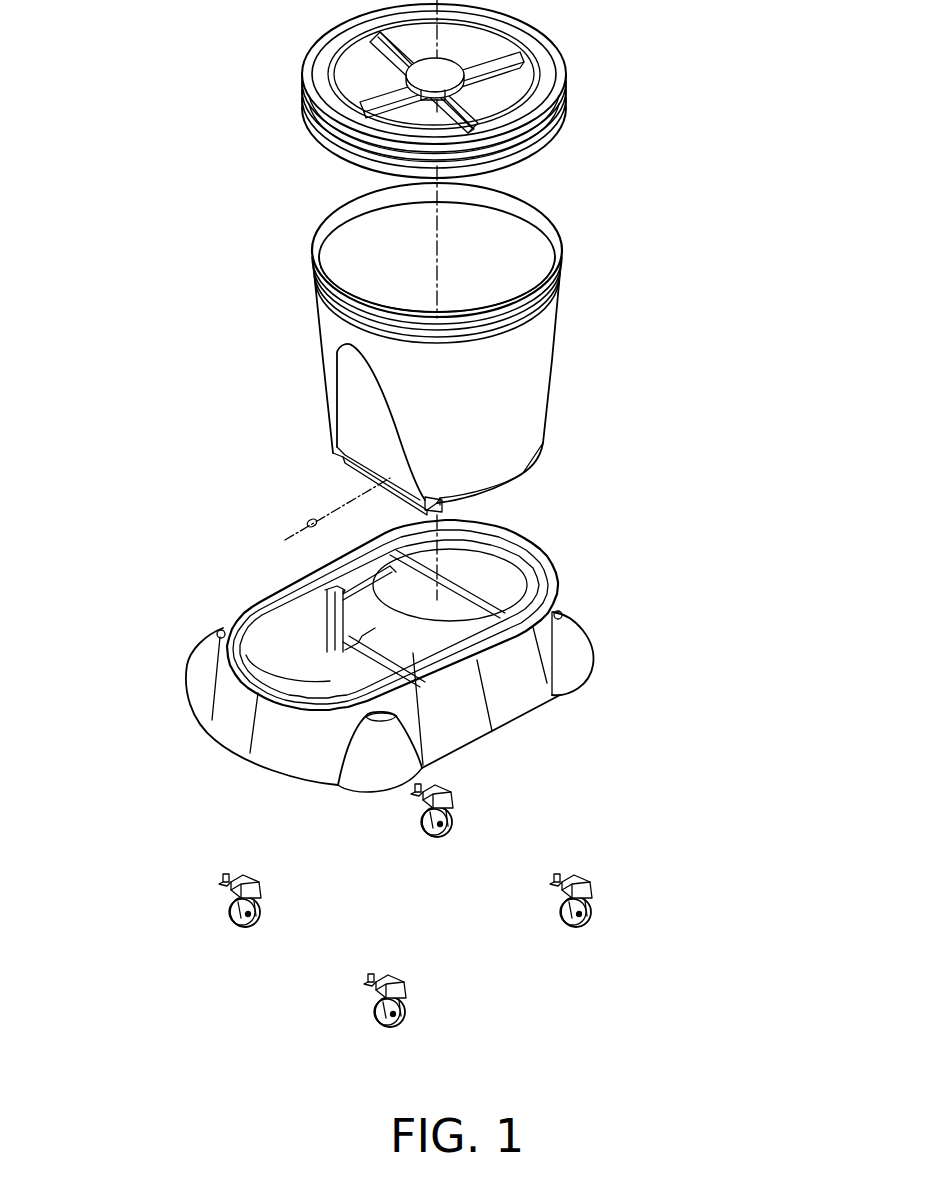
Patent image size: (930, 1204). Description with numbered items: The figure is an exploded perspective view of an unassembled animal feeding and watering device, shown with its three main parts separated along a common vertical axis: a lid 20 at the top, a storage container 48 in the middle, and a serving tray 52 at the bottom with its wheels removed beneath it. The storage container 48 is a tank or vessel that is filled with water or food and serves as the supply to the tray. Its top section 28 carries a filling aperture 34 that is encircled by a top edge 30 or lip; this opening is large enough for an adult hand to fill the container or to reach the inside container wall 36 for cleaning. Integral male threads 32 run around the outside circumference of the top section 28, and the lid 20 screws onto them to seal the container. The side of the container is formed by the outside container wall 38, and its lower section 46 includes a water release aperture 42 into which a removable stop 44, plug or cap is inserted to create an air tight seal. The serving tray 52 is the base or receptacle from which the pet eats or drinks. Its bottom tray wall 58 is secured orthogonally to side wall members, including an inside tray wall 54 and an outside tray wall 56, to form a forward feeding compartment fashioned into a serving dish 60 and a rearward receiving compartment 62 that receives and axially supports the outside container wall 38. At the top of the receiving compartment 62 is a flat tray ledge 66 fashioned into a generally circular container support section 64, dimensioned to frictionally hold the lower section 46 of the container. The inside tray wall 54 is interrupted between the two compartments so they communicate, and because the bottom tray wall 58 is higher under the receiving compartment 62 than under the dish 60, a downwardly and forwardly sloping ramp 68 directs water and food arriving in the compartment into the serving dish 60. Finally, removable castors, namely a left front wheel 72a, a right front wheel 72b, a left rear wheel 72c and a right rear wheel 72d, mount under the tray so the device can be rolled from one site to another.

The lid 20 is at (322, 44).
The top section 28 is at (557, 262).
The top edge 30 is at (431, 347).
The male threads 32 is at (560, 290).
The filling aperture 34 is at (375, 243).
The inside container wall 36 is at (465, 232).
The outside container wall 38 is at (525, 357).
The water release aperture 42 is at (385, 482).
The stop 44 is at (307, 521).
The lower section 46 is at (467, 498).
The storage container 48 is at (478, 403).
The serving tray 52 is at (318, 776).
The inside tray wall 54 is at (371, 663).
The outside tray wall 56 is at (530, 678).
The bottom tray wall 58 is at (290, 673).
The serving dish 60 is at (320, 680).
The receiving compartment 62 is at (478, 583).
The container support section 64 is at (533, 592).
The tray ledge 66 is at (335, 555).
The sloping ramp 68 is at (405, 617).
The left front wheel 72a is at (410, 1008).
The right front wheel 72b is at (262, 906).
The left rear wheel 72c is at (590, 898).
The right rear wheel 72d is at (458, 812).